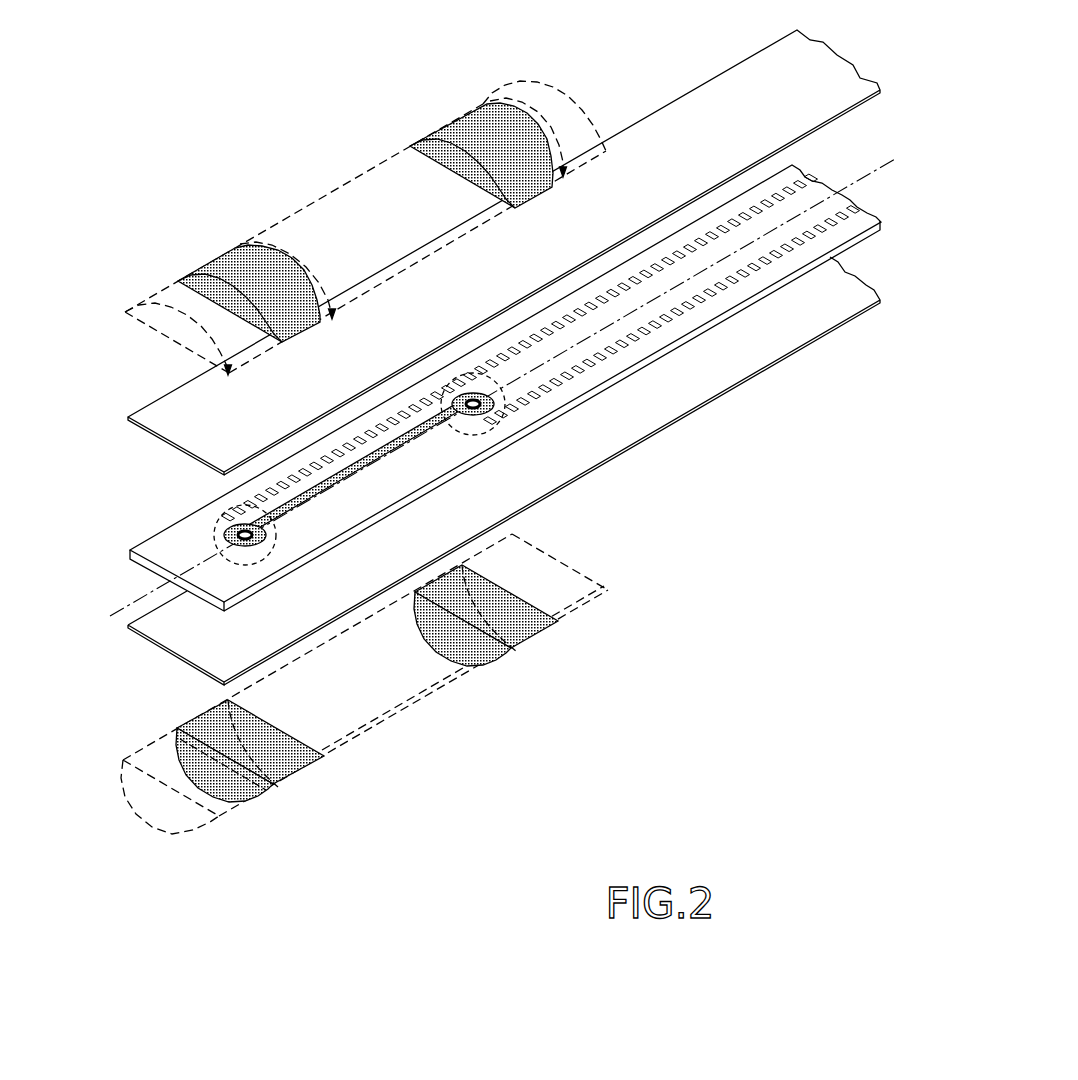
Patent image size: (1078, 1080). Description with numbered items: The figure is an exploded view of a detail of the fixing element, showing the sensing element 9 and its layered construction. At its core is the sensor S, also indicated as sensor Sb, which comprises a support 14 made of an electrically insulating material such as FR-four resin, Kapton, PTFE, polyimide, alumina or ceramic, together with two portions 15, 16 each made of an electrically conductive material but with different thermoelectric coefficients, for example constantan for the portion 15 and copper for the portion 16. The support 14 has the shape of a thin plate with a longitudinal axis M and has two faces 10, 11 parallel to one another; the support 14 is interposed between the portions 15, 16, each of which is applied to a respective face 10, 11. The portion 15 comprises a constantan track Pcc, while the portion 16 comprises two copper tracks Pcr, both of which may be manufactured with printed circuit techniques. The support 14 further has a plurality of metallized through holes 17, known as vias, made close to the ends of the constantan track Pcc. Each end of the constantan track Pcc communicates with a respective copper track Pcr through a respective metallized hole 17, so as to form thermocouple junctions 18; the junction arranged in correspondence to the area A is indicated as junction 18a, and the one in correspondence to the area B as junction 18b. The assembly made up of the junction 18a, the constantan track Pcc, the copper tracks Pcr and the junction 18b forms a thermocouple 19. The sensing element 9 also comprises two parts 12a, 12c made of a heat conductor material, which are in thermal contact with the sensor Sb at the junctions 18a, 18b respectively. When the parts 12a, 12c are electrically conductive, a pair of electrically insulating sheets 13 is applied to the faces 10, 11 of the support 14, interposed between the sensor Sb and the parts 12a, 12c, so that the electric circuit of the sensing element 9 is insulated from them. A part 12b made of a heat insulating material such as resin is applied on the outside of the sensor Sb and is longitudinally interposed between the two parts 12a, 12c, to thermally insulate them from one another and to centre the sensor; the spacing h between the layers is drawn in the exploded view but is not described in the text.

The sensing element 9 is at (130, 233).
The face 10 is at (806, 204).
The face 11 is at (803, 284).
The part made of a heat conductor material 12a is at (207, 266).
The part made of a heat insulating material 12b is at (318, 198).
The part made of a heat conductor material 12c is at (412, 142).
The electrically insulating sheet 13 is at (148, 407).
The support 14 is at (873, 217).
The portion 15 is at (354, 455).
The portion 16 is at (676, 332).
The metallized through hole 17 is at (293, 431).
The thermocouple junction 18 is at (281, 432).
The junction 18a is at (238, 530).
The junction 18b is at (411, 366).
The thermocouple 19 is at (506, 376).
The area A is at (282, 556).
The area B is at (485, 440).
The gap h is at (580, 524).
The longitudinal axis M is at (113, 615).
The sensor S is at (454, 388).
The copper track Pcr is at (697, 296).
The constantan track Pcc is at (352, 478).